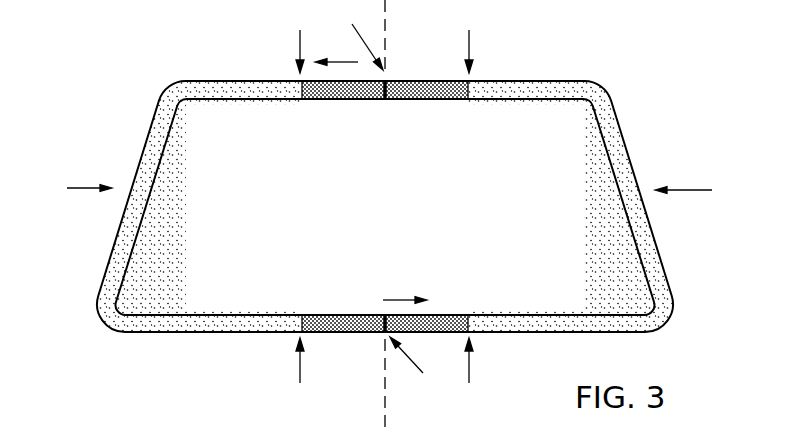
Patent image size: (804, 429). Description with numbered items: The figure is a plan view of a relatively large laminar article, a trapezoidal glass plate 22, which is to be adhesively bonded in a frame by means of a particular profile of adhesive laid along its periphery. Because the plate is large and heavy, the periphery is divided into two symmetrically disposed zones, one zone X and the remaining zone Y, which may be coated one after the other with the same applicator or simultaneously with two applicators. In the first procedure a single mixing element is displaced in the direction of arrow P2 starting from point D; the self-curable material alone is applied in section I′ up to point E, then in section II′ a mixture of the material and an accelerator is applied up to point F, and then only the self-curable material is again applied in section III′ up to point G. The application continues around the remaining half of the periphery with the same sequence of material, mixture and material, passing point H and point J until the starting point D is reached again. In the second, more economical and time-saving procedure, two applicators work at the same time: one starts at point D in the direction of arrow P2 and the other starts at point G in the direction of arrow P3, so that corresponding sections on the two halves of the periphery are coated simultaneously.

The trapezoidal glass plate 22 is at (587, 182).
The section I' I′ is at (345, 100).
The section II' II′ is at (140, 205).
The section III' III′ is at (343, 317).
The point E is at (300, 37).
The point D is at (363, 36).
The point J is at (468, 37).
The point F is at (300, 376).
The point G is at (413, 367).
The point H is at (471, 376).
The zone X is at (693, 190).
The zone Y is at (79, 188).
The arrow P2 is at (336, 50).
The arrow P3 is at (405, 288).